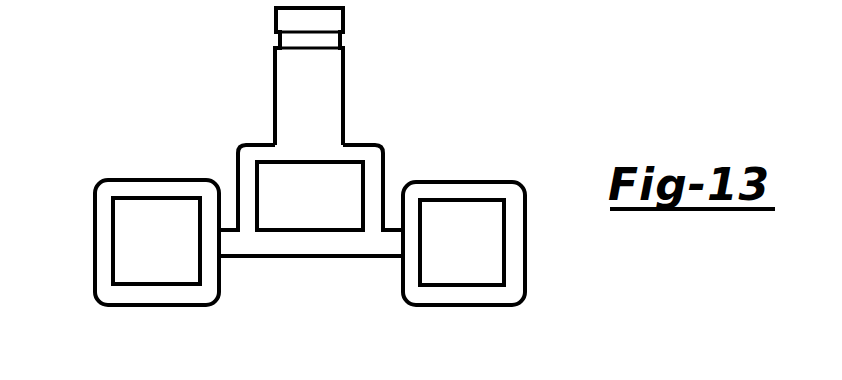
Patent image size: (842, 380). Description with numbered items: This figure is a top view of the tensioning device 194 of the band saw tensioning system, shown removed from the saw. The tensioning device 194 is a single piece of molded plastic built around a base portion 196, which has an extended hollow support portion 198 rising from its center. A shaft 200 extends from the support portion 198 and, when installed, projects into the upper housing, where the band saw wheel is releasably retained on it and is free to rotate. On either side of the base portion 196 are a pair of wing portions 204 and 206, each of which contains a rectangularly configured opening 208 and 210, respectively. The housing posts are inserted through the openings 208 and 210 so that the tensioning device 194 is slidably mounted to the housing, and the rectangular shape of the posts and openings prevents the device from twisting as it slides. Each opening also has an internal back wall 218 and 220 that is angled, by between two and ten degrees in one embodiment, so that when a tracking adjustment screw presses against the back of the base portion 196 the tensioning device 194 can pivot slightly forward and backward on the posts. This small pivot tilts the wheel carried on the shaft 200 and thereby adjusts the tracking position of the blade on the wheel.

The tensioning device 194 is at (413, 81).
The base portion 196 is at (298, 243).
The hollow support portion 198 is at (374, 173).
The shaft 200 is at (285, 100).
The wing portion 204 is at (101, 255).
The wing portion 206 is at (493, 187).
The rectangularly configured opening 208 is at (133, 284).
The rectangularly configured opening 210 is at (438, 285).
The internal back wall 218 is at (173, 284).
The internal back wall 220 is at (477, 285).